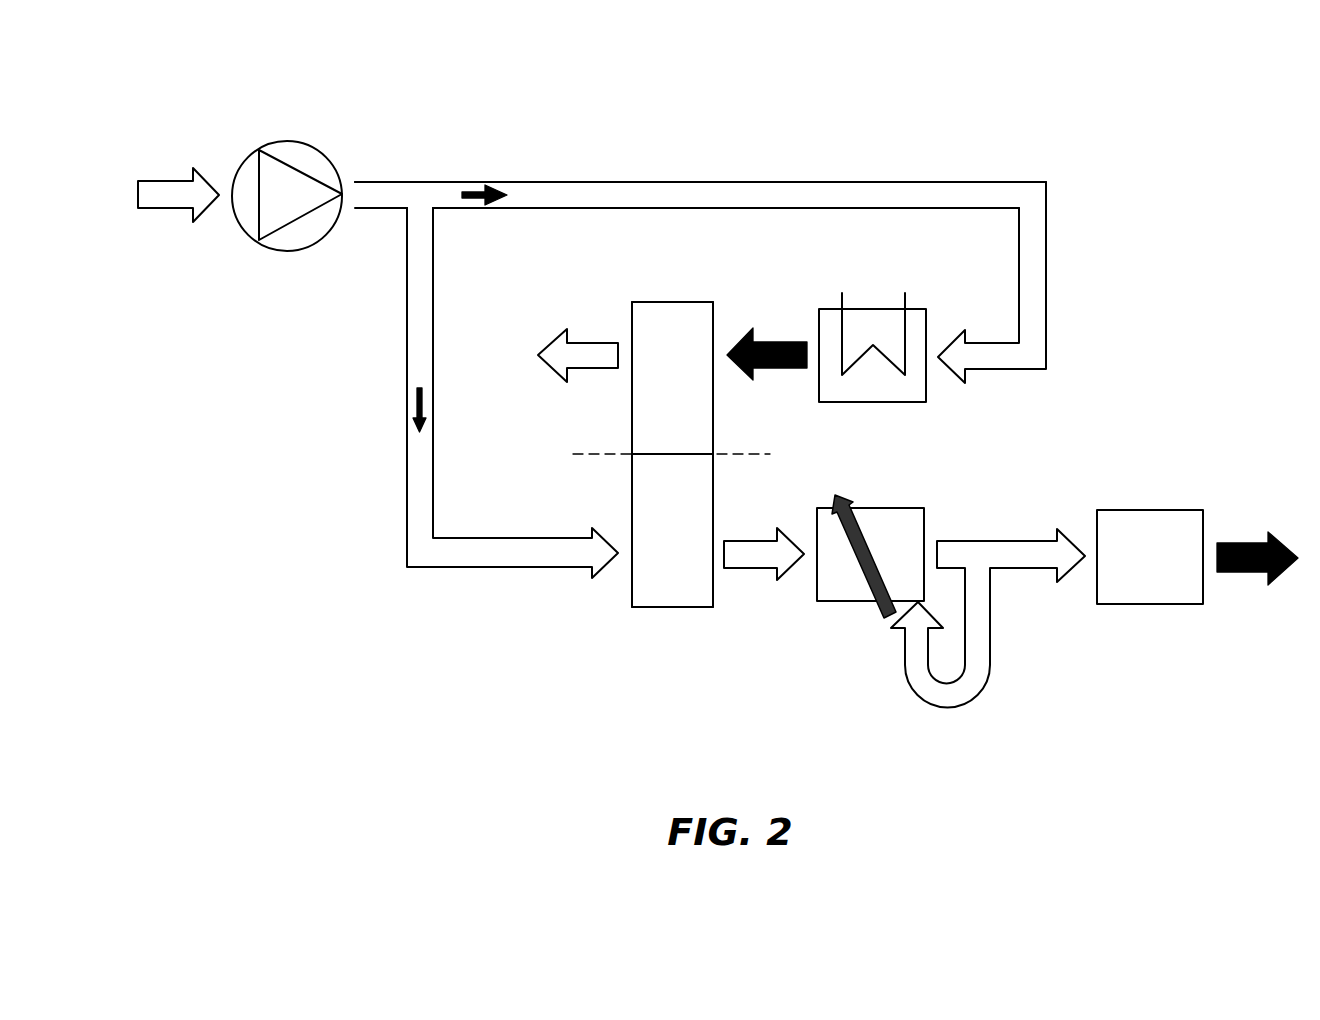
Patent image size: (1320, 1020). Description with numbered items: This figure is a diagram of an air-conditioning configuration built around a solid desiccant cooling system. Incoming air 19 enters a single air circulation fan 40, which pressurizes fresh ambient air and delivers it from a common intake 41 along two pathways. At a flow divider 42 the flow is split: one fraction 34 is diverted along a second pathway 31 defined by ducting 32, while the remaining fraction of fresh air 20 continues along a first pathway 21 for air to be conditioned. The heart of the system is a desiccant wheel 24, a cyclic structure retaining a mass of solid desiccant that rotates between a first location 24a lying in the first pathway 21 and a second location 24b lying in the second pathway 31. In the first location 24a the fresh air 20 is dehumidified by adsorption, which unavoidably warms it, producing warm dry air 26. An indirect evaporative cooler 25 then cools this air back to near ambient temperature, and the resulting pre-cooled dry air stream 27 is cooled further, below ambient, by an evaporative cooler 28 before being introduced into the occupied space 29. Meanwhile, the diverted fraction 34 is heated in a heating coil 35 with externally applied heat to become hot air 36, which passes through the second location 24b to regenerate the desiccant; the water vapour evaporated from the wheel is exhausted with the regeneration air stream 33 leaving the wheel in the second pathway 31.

The air 19 is at (162, 180).
The air circulation fan 40 is at (287, 140).
The common intake 41 is at (352, 181).
The flow divider 42 is at (420, 195).
The second pathway 31 is at (478, 190).
The ducting 32 is at (531, 181).
The regeneration air fraction 34 is at (1047, 261).
The fresh air 20 is at (406, 338).
The first pathway 21 is at (406, 397).
The desiccant wheel 24 is at (714, 433).
The first location 24a is at (667, 608).
The second location 24b is at (672, 301).
The regeneration air stream 33 is at (590, 341).
The hot air 36 is at (780, 341).
The heating coil 35 is at (872, 308).
The warm dry air 26 is at (748, 569).
The indirect evaporative cooler 25 is at (870, 602).
The pre-cooled dry air stream 27 is at (995, 540).
The evaporative cooler 28 is at (1148, 605).
The occupied space 29 is at (1241, 542).